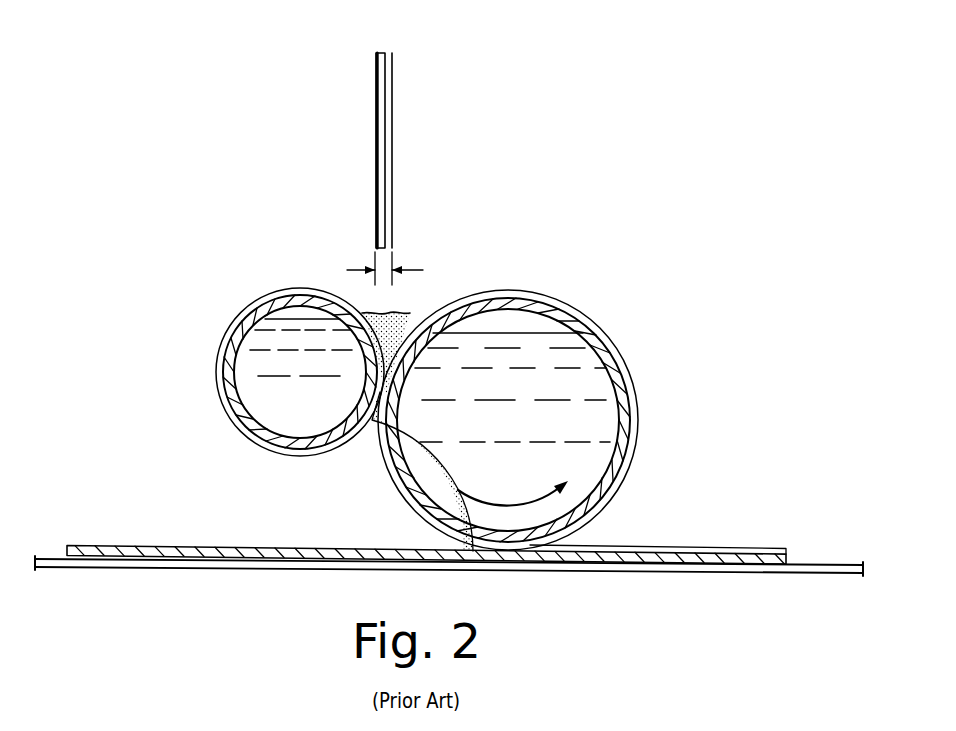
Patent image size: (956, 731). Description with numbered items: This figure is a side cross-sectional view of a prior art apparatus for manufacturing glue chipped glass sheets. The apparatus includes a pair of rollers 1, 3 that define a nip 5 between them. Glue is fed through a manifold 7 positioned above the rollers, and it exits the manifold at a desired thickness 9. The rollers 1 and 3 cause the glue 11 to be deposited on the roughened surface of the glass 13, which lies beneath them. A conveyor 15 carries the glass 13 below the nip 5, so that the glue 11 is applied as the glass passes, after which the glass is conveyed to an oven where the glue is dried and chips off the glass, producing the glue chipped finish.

The roller 1 is at (223, 339).
The roller 3 is at (613, 352).
The nip 5 is at (372, 427).
The manifold 7 is at (393, 133).
The desired thickness 9 is at (392, 260).
The glue 11 is at (428, 290).
The glass 13 is at (96, 540).
The conveyor 15 is at (843, 565).